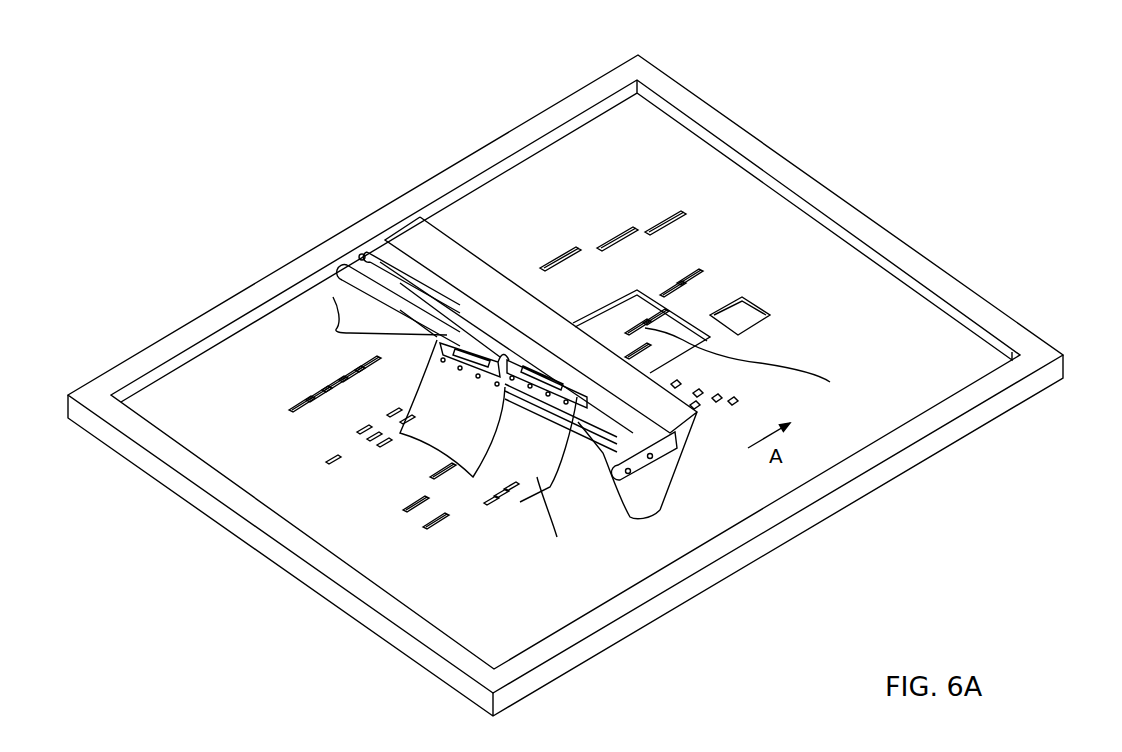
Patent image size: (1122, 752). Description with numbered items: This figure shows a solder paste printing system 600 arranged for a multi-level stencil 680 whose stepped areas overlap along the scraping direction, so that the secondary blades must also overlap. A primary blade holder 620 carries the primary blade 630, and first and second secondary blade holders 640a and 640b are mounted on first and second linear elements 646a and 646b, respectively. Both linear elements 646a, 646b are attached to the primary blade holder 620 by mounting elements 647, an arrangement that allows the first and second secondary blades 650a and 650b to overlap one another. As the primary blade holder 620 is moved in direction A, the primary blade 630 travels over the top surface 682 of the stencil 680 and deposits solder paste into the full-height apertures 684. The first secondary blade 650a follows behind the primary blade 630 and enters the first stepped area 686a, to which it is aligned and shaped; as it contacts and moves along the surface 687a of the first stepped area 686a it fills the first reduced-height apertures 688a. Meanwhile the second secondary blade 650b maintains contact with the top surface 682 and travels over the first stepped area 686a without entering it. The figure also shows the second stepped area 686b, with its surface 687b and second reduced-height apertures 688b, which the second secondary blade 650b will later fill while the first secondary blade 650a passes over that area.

The solder paste printing system 600 is at (248, 88).
The primary blade holder 620 is at (491, 277).
The primary blade 630 is at (672, 468).
The first secondary blade holder 640a is at (665, 513).
The second secondary blade holder 640b is at (437, 345).
The first linear element 646a is at (393, 278).
The second linear element 646b is at (362, 293).
The mounting elements 647 is at (360, 255).
The first secondary blade 650a is at (537, 477).
The second secondary blade 650b is at (437, 440).
The stencil 680 is at (930, 360).
The top surface 682 is at (871, 297).
The full-height apertures 684 is at (755, 300).
The first stepped area 686a is at (455, 469).
The second stepped area 686b is at (597, 332).
The surface of the first stepped area 687a is at (638, 516).
The surface of the second stepped area 687b is at (642, 300).
The first reduced-height apertures 688a is at (587, 465).
The second reduced-height apertures 688b is at (830, 382).